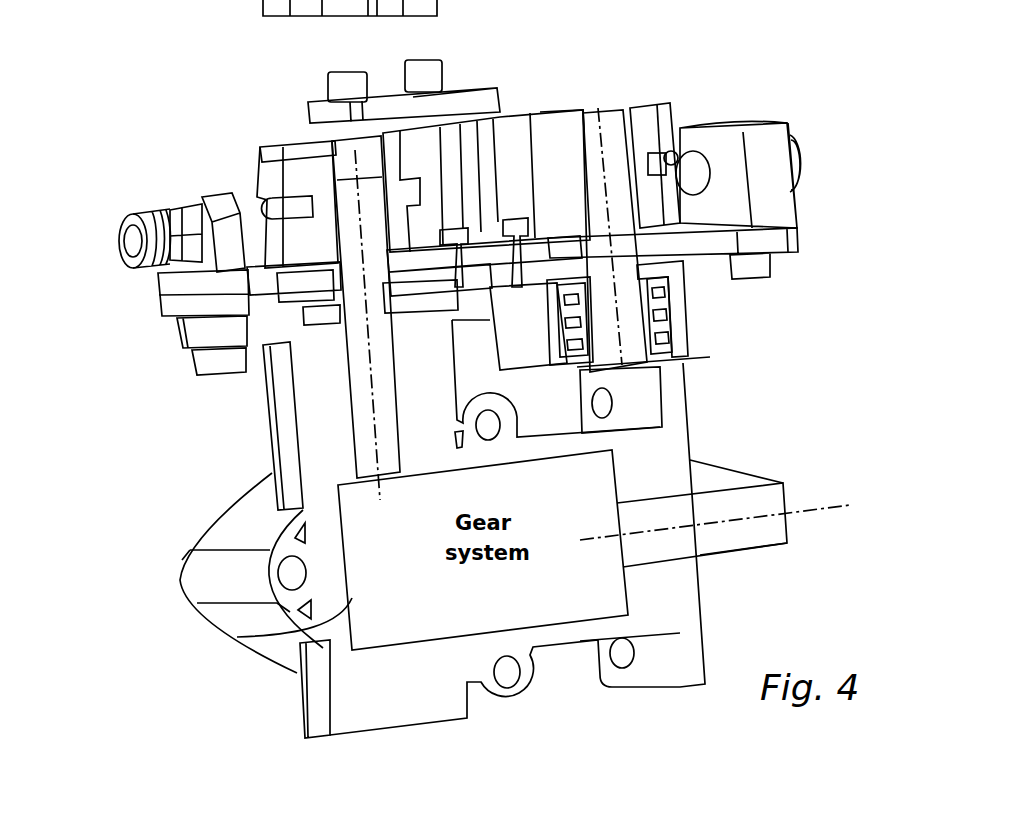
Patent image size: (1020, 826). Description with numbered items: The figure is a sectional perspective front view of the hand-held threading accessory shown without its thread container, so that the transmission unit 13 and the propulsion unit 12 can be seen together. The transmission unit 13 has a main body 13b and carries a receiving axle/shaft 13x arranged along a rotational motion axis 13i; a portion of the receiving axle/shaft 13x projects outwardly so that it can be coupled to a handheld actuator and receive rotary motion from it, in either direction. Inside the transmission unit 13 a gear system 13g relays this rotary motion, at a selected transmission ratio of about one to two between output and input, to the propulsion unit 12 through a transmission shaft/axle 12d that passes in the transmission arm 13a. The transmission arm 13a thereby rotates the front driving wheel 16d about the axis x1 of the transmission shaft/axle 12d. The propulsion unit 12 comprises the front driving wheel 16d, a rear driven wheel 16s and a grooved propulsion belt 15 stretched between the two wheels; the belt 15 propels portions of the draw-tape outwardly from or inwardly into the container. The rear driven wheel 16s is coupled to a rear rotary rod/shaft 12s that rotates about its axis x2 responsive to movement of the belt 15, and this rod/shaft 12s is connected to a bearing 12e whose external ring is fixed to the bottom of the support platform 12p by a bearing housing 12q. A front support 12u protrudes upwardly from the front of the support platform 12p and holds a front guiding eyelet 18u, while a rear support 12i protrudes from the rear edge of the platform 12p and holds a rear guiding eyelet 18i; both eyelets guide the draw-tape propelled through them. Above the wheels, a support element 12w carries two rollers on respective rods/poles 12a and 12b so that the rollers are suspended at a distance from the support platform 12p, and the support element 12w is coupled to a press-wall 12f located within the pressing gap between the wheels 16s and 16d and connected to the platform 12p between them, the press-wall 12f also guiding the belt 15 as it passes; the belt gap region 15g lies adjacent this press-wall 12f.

The transmission unit 13 is at (121, 0).
The transmission arm 13a is at (267, 393).
The main body 13b is at (573, 650).
The gear system 13g is at (240, 636).
The rotational motion axis 13i is at (843, 504).
The receiving axle/shaft 13x is at (757, 548).
The propulsion unit 12 is at (215, 160).
The rod/pole 12a is at (333, 98).
The rod/pole 12b is at (447, 68).
The support element 12w is at (383, 100).
The press-wall 12f is at (525, 90).
The transmission shaft/axle 12d is at (353, 372).
The front support 12u is at (182, 283).
The rear support 12i is at (743, 123).
The support platform 12p is at (793, 240).
The rear rotary rod/shaft 12s is at (622, 205).
The bearing 12e is at (673, 300).
The bearing housing 12q is at (690, 330).
The grooved propulsion belt 15 is at (673, 110).
The clamp lip 15g is at (268, 210).
The front driving wheel 16d is at (300, 138).
The rear driven wheel 16s is at (560, 110).
The front guiding eyelet 18u is at (135, 212).
The rear guiding eyelet 18i is at (807, 146).
The axis x1 is at (373, 417).
The axis x2 is at (613, 300).